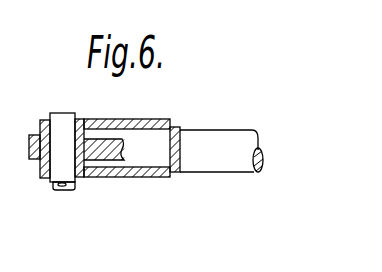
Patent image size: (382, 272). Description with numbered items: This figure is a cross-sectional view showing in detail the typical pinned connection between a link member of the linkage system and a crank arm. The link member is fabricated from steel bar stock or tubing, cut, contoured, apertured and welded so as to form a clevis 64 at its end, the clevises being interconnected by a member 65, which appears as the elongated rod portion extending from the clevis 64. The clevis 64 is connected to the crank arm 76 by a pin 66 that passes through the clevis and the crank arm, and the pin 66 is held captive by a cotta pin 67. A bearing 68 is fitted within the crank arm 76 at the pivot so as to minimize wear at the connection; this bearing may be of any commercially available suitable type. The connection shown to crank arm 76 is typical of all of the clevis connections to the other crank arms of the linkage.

The clevis 64 is at (124, 122).
The member 65 is at (218, 161).
The pin 66 is at (66, 191).
The cotta pin 67 is at (79, 187).
The bearing 68 is at (41, 178).
The crank arm 76 is at (31, 135).